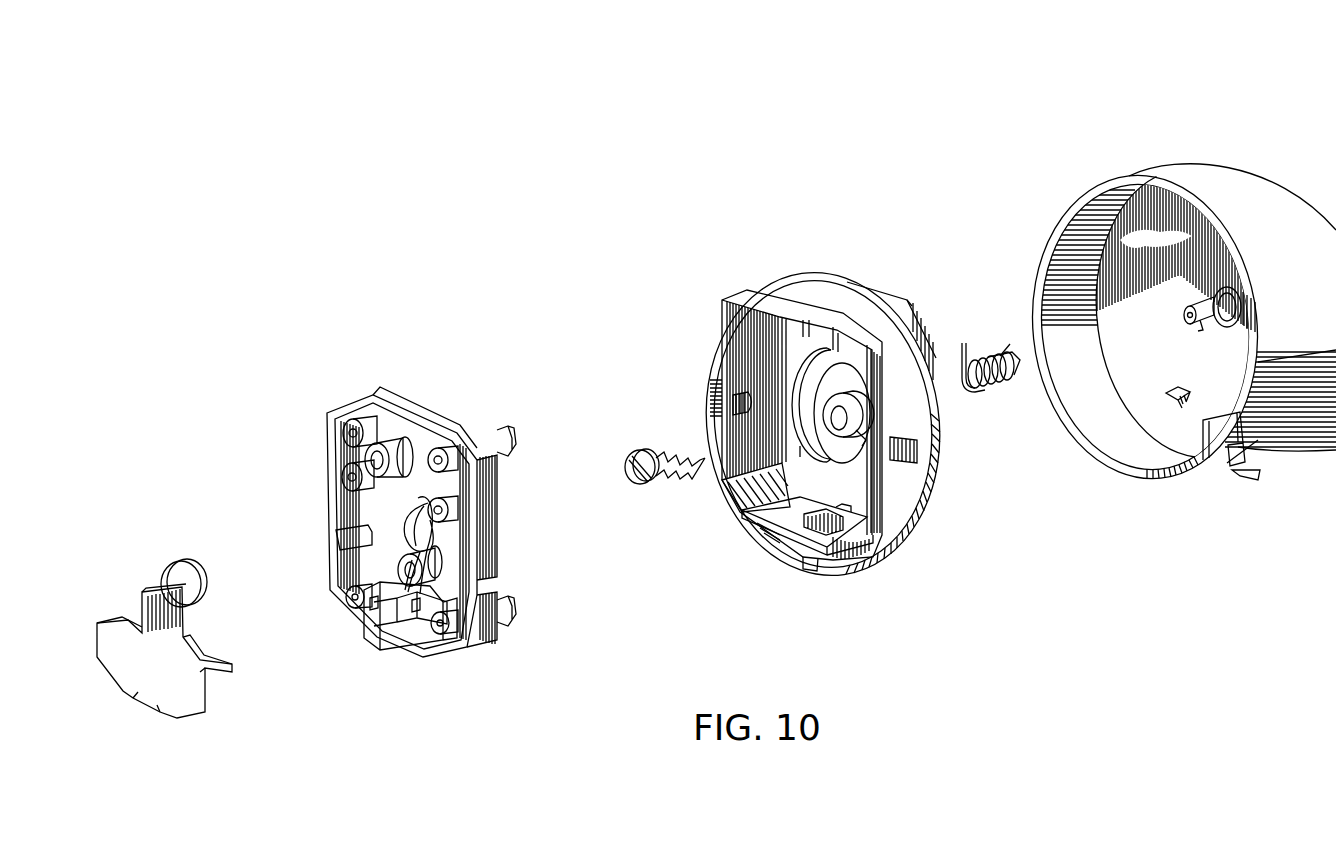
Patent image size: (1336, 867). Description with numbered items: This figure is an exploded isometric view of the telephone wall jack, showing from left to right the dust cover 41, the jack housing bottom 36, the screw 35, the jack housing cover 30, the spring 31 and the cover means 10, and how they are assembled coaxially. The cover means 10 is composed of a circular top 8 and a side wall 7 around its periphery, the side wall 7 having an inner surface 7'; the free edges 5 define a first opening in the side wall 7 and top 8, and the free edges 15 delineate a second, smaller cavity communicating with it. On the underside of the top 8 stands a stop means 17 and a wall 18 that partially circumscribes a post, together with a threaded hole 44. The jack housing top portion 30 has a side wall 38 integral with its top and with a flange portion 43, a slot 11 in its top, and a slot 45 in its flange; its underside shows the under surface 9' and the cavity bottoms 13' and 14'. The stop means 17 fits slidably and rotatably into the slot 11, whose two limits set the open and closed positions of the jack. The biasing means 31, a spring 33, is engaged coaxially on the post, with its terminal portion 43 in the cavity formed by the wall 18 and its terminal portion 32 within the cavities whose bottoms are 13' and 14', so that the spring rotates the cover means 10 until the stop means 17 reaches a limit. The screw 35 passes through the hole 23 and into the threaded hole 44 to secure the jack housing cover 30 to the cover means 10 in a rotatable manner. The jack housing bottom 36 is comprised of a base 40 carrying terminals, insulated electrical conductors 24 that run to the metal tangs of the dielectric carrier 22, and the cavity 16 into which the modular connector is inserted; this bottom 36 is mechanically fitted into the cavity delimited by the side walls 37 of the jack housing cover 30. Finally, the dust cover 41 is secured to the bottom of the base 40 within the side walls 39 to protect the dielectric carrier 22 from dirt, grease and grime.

The free edges of first opening 5 is at (1172, 474).
The side wall 7 is at (1177, 327).
The inner surface of side wall 7' is at (1170, 319).
The circular top 8 is at (1164, 360).
The under surface of top 9' is at (843, 344).
The cover means 10 is at (1177, 287).
The slot 11 is at (803, 328).
The bottom of cavity 13' is at (867, 413).
The bottom of cavity 14' is at (811, 403).
The free edges of second cavity 15 is at (1256, 462).
The cavity 16 is at (846, 519).
The stop means 17 is at (1184, 392).
The wall 18 is at (1216, 293).
The dielectric carrier 22 is at (396, 640).
The hole 23 is at (804, 467).
The insulated electrical conductors 24 is at (426, 514).
The top portion of jack housing 30 is at (853, 383).
The biasing means 31 is at (982, 327).
The terminal portion of spring 32 is at (964, 343).
The spring 33 is at (988, 388).
The screw 35 is at (645, 448).
The bottom portion of jack housing 36 is at (405, 490).
The side wall of jack housing cover 37 is at (752, 290).
The side wall 38 is at (910, 308).
The side walls 39 is at (382, 394).
The base 40 is at (397, 509).
The dust cover 41 is at (152, 688).
The flange portion / terminal portion of spring 43 is at (914, 518).
The threaded hole 44 is at (1184, 316).
The slot 45 is at (812, 566).